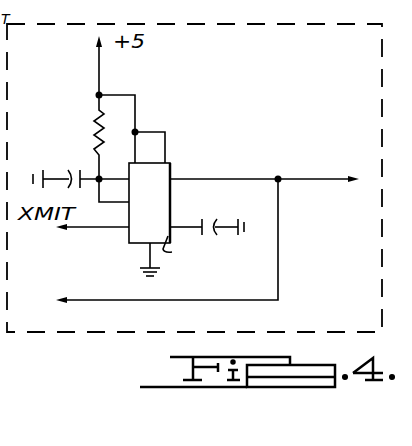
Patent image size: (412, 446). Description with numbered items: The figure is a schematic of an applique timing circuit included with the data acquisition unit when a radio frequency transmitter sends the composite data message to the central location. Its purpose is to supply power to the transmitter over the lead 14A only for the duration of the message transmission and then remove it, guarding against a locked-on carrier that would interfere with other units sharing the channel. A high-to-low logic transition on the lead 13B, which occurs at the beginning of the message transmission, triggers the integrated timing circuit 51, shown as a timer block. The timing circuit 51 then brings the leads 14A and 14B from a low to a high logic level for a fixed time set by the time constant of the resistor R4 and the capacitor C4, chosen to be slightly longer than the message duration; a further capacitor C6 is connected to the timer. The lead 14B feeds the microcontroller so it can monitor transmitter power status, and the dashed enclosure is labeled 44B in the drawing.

The lead 44B is at (0, 352).
The integrated timing circuit 51 is at (171, 166).
The lead 13B is at (112, 230).
The lead 14A is at (305, 177).
The lead 14B is at (279, 237).
The resistor R4 is at (97, 132).
The capacitor C4 is at (76, 168).
The capacitor C6 is at (212, 218).